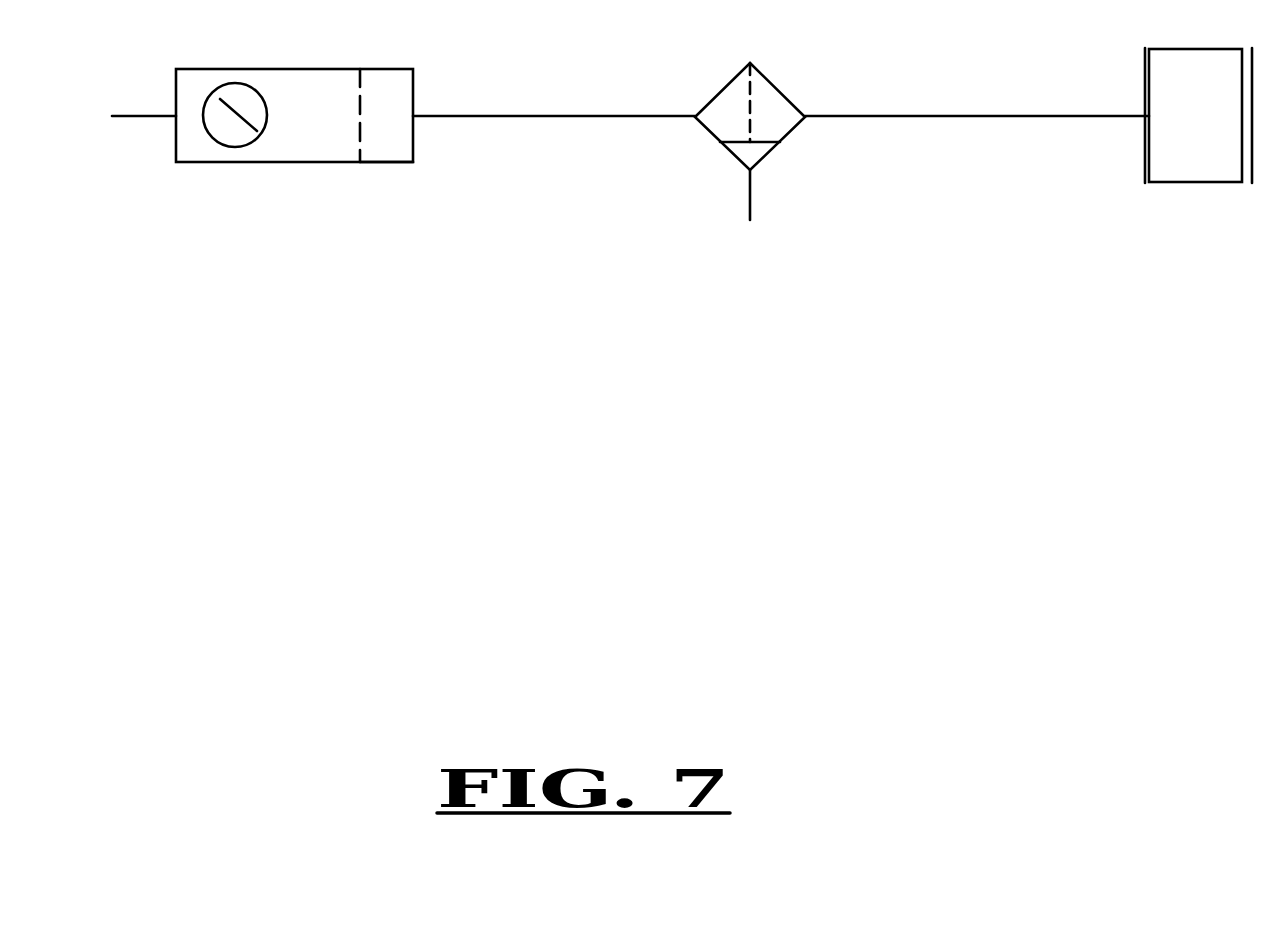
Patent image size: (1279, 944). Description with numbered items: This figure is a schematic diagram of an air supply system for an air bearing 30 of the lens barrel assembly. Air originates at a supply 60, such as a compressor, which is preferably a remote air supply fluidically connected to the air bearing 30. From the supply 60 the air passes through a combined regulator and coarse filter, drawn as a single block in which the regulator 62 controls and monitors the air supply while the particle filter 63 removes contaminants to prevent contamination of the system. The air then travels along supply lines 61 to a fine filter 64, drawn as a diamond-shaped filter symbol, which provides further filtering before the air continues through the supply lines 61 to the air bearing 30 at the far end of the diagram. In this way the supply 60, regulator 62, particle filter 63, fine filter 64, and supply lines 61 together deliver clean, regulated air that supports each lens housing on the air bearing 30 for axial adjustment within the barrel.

The air bearing 30 is at (1225, 146).
The remote air supply 60 is at (121, 116).
The supply lines 61 is at (980, 128).
The regulator 62 is at (322, 147).
The particle filter 63 is at (403, 165).
The fine filter 64 is at (750, 164).